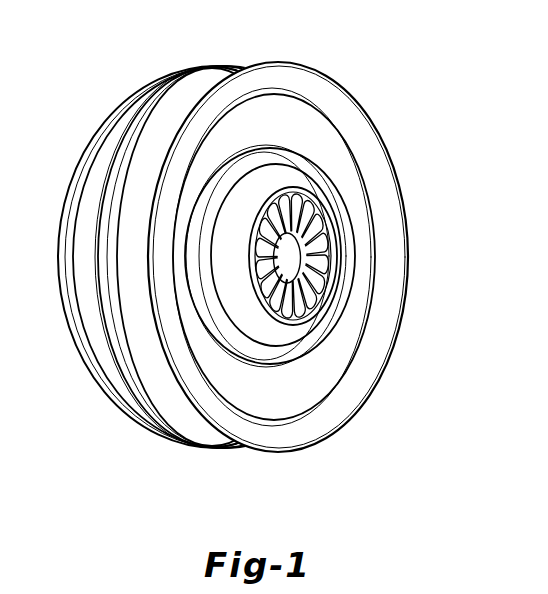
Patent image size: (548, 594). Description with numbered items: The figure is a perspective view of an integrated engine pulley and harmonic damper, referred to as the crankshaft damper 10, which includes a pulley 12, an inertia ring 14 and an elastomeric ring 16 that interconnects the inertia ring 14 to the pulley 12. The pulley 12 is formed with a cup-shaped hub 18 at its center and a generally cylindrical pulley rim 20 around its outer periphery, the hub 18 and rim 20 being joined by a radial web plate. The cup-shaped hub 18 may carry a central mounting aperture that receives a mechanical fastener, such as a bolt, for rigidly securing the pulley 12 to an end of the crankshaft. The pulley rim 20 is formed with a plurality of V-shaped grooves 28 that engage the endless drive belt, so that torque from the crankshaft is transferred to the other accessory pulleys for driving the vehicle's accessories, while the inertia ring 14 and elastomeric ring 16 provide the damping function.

The crankshaft damper 10 is at (279, 227).
The pulley 12 is at (313, 186).
The inertia ring 14 is at (262, 121).
The elastomeric ring 16 is at (379, 354).
The cup-shaped hub 18 is at (288, 176).
The pulley rim 20 is at (76, 165).
The V-shaped grooves 28 is at (160, 96).